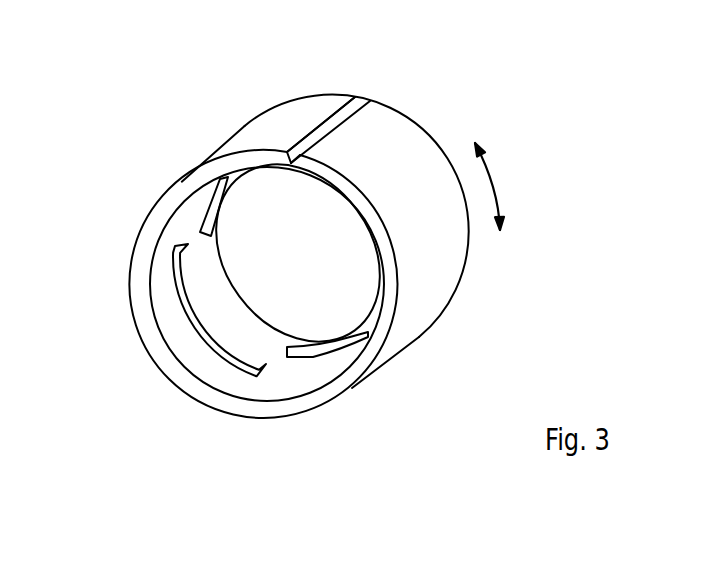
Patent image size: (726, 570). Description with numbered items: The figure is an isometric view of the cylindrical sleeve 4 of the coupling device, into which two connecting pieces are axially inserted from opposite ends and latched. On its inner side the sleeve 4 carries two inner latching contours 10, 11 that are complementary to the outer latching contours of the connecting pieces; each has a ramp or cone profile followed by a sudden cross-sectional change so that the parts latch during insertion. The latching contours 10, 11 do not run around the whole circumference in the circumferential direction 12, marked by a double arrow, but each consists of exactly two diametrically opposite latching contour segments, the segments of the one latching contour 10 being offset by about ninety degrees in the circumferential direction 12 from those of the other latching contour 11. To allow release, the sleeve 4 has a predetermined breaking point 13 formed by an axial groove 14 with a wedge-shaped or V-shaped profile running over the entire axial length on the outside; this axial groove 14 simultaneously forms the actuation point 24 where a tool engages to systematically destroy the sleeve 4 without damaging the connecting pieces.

The sleeve 4 is at (479, 117).
The inner latching contour 10 is at (184, 288).
The inner latching contour 11 is at (223, 186).
The circumferential direction 12 is at (495, 182).
The predetermined breaking point 13 is at (335, 91).
The axial groove 14 is at (343, 91).
The actuation point 24 is at (322, 128).